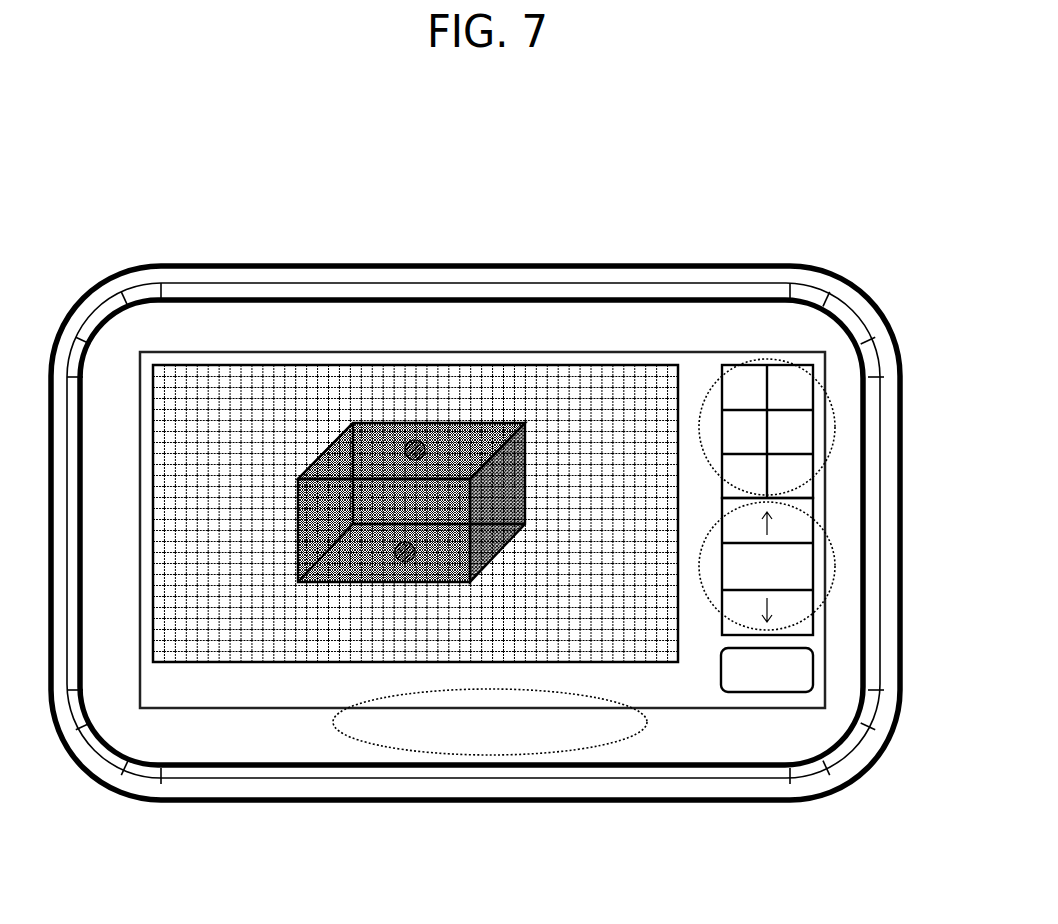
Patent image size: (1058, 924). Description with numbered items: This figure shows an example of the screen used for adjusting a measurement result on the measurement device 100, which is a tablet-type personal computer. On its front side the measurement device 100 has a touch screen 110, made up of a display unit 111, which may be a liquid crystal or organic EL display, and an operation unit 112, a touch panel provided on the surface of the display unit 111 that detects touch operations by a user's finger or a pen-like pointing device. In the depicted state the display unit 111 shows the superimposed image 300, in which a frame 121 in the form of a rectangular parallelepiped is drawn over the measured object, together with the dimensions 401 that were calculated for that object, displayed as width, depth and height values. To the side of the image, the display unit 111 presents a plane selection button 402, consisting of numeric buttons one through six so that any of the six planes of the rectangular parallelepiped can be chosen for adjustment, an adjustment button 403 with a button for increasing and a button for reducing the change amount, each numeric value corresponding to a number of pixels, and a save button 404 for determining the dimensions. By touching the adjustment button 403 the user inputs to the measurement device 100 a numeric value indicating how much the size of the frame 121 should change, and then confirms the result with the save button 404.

The measurement device 100 is at (496, 155).
The touch screen 110 is at (743, 197).
The display unit 111 is at (648, 352).
The operation unit 112 is at (482, 530).
The frame 121 is at (468, 423).
The superimposed image 300 is at (353, 365).
The dimensions 401 is at (360, 745).
The plane selection button 402 is at (760, 360).
The adjustment button 403 is at (703, 585).
The save button 404 is at (733, 692).